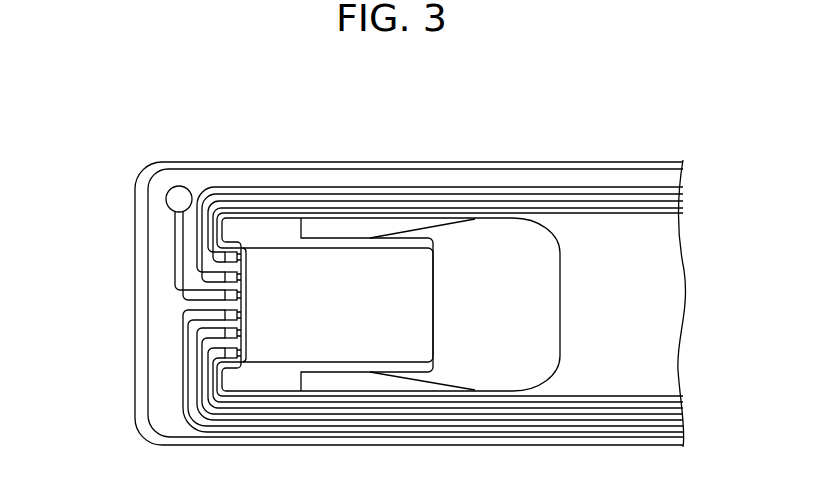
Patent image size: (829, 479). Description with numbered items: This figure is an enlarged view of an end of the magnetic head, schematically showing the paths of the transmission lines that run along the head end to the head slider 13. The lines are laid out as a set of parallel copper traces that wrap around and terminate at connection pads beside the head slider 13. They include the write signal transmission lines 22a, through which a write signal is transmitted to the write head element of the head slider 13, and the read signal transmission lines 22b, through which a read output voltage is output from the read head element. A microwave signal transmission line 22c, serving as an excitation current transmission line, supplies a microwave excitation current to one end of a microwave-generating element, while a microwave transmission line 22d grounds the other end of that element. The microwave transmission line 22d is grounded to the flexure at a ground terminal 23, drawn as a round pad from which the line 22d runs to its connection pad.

The head slider 13 is at (340, 277).
The write signal transmission lines 22a is at (213, 241).
The read signal transmission lines 22b is at (200, 259).
The microwave signal transmission line 22c is at (187, 333).
The microwave transmission line 22d is at (180, 280).
The ground terminal 23 is at (170, 196).